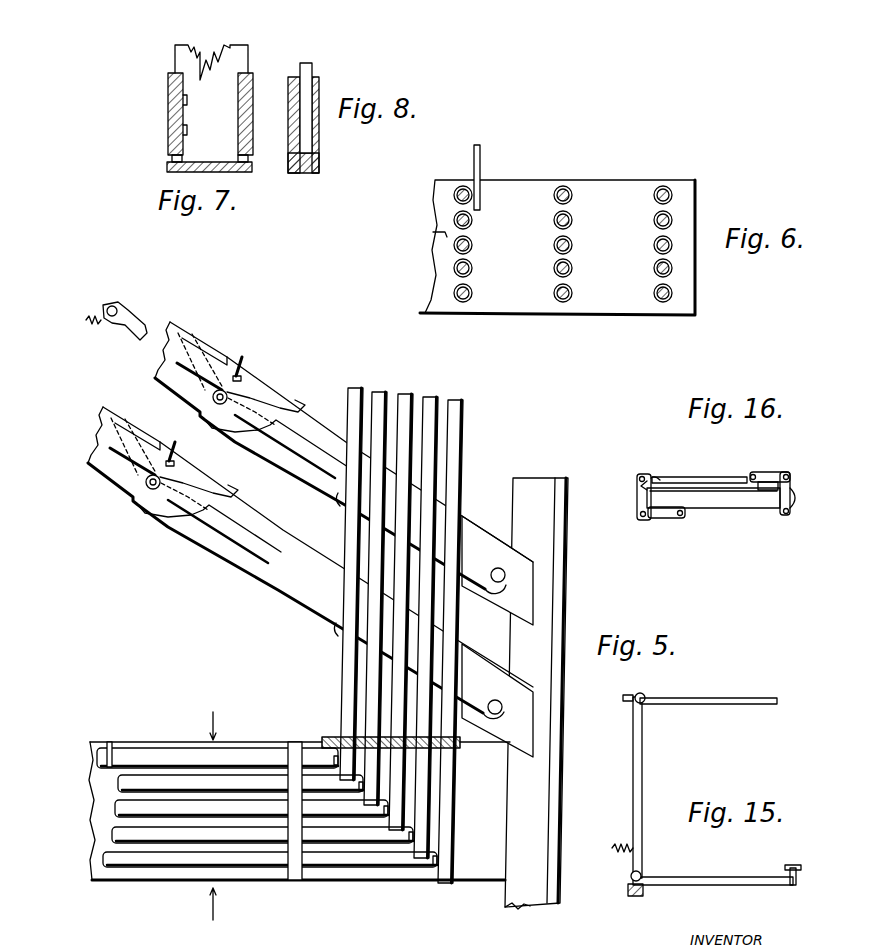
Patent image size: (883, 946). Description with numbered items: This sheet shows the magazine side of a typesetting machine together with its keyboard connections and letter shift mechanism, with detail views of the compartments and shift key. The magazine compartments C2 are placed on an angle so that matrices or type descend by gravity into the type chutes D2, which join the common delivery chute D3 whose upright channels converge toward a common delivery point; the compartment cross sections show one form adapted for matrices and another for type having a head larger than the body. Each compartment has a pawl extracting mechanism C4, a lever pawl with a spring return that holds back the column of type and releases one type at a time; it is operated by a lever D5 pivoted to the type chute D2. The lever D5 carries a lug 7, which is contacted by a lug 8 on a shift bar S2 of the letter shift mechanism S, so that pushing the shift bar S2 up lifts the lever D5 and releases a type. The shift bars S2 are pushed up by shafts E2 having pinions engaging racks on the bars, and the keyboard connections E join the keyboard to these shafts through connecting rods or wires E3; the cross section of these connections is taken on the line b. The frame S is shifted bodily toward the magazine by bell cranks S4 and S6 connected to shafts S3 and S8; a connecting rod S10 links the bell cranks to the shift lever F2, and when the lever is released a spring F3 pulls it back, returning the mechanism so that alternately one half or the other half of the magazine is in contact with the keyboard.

In FIG. 7, the magazine compartment C2 is at (168, 113).
In FIG. 8, the magazine compartment C2 is at (319, 140).
In FIG. 5, the magazine compartment C2 is at (196, 344).
In FIG. 5, the pawl extracting mechanism C4 is at (122, 316).
In FIG. 5, the type chute D2 is at (293, 421).
In FIG. 16, the common delivery chute D3 is at (697, 477).
In FIG. 5, the common delivery chute D3 is at (560, 760).
In FIG. 5, the lever D5 is at (303, 455).
In FIG. 5, the lug 7 is at (331, 478).
In FIG. 5, the lug 8 is at (337, 499).
In FIG. 16, the letter shift mechanism S is at (713, 498).
In FIG. 5, the letter shift mechanism S is at (336, 737).
In FIG. 6, the shift bar S2 is at (481, 157).
In FIG. 5, the shift bar S2 is at (358, 390).
In FIG. 16, the shaft S3 is at (790, 474).
In FIG. 16, the bell crank S4 is at (637, 498).
In FIG. 16, the bell crank S6 is at (768, 476).
In FIG. 16, the shaft S8 is at (645, 518).
In FIG. 16, the connecting rod S10 is at (651, 478).
In FIG. 15, the connecting rod S10 is at (714, 699).
In FIG. 6, the keyboard connections E is at (538, 183).
In FIG. 5, the keyboard connections E is at (143, 742).
In FIG. 6, the shaft E2 is at (570, 188).
In FIG. 5, the shaft E2 is at (245, 746).
In FIG. 6, the connecting rod or wire E3 is at (433, 232).
In FIG. 5, the connecting rod or wire E3 is at (103, 742).
In FIG. 16, the shift lever F2 is at (640, 487).
In FIG. 15, the shift lever F2 is at (733, 880).
In FIG. 15, the spring F3 is at (622, 847).
In FIG. 5, the section line b is at (212, 819).